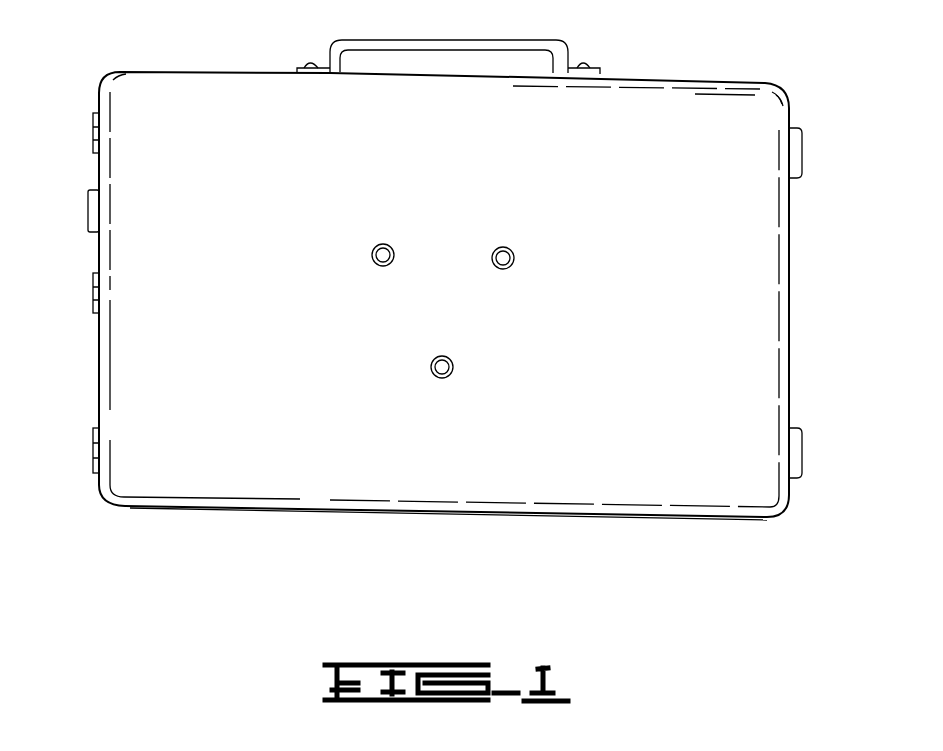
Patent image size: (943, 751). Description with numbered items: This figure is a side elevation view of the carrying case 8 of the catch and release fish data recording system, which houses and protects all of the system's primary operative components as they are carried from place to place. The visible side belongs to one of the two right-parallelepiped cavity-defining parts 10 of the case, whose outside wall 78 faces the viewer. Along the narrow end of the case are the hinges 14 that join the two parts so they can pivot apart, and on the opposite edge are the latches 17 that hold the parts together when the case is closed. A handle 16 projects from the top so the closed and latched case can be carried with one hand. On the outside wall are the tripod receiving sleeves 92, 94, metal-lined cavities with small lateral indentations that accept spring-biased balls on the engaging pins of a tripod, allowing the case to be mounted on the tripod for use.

The cavity-defining part 10 is at (158, 100).
The carrying case 8 is at (794, 262).
The handle 16 is at (405, 40).
The hinge 14 is at (93, 140).
The latches 17 is at (797, 130).
The metal sleeve 92 is at (388, 243).
The metal sleeve 94 is at (507, 246).
The outside wall 78 is at (335, 390).